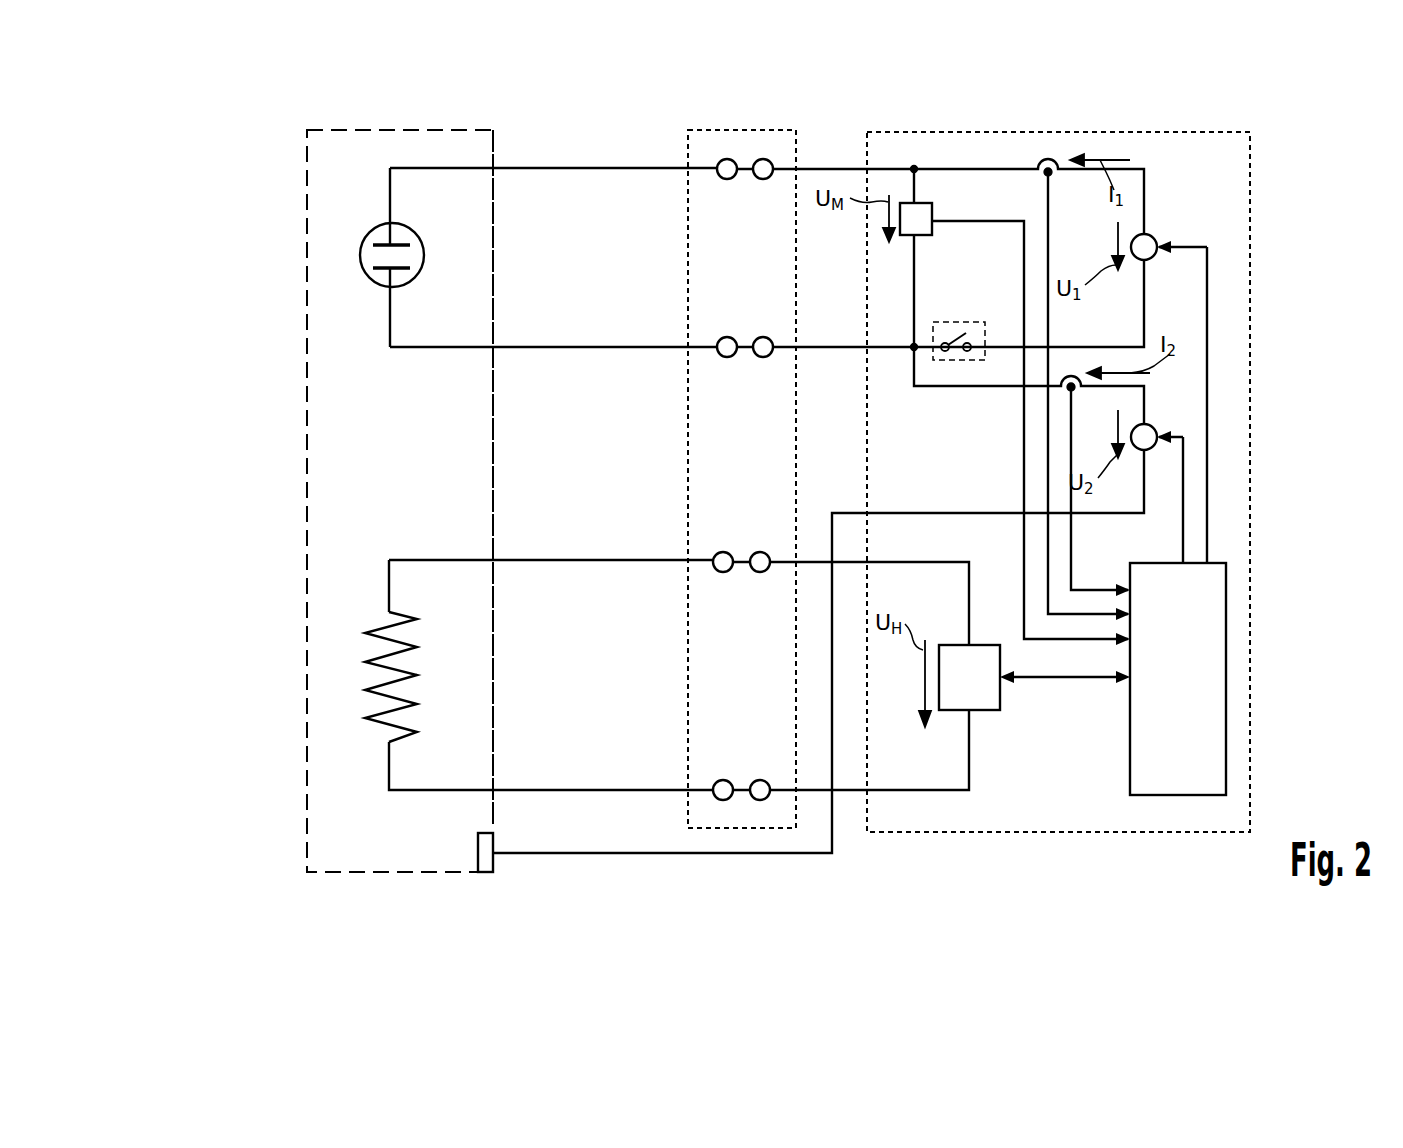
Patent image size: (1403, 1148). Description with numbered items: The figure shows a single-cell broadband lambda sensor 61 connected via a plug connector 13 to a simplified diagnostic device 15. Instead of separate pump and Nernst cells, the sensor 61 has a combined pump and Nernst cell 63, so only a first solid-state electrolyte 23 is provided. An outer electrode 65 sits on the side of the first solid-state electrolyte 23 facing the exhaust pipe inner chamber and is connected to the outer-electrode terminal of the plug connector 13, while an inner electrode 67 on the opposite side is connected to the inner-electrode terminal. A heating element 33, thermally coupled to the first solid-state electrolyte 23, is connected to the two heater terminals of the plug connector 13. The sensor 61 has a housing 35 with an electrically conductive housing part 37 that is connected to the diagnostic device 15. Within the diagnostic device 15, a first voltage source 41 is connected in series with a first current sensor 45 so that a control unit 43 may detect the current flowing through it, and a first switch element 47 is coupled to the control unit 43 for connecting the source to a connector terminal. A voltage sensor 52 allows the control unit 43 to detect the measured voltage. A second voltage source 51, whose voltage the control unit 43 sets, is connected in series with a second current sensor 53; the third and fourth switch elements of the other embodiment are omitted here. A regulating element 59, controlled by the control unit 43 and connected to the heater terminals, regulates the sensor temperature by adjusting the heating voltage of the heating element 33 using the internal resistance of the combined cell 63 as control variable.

The single-cell broadband lambda sensor 61 is at (285, 128).
The housing 35 is at (493, 152).
The plug connector 13 is at (688, 140).
The combined pump and Nernst cell 63 is at (366, 236).
The outer electrode 65 is at (380, 241).
The inner electrode 67 is at (382, 274).
The first solid-state electrolyte 23 is at (405, 256).
The heating element 33 is at (366, 660).
The electrically conductive housing part 37 is at (493, 860).
The diagnostic device 15 is at (1250, 548).
The voltage sensor 52 is at (932, 212).
The first switch element 47 is at (962, 325).
The first current sensor 45 is at (1056, 178).
The first voltage source 41 is at (1152, 236).
The second voltage source 51 is at (1146, 428).
The second current sensor 53 is at (1076, 392).
The control unit 43 is at (1130, 728).
The regulating element 59 is at (985, 710).